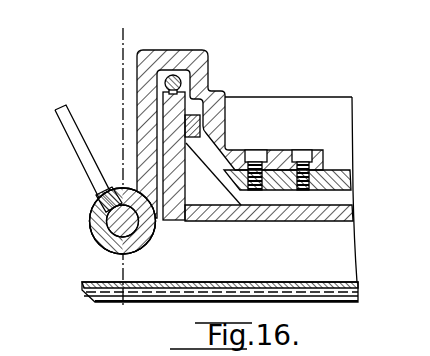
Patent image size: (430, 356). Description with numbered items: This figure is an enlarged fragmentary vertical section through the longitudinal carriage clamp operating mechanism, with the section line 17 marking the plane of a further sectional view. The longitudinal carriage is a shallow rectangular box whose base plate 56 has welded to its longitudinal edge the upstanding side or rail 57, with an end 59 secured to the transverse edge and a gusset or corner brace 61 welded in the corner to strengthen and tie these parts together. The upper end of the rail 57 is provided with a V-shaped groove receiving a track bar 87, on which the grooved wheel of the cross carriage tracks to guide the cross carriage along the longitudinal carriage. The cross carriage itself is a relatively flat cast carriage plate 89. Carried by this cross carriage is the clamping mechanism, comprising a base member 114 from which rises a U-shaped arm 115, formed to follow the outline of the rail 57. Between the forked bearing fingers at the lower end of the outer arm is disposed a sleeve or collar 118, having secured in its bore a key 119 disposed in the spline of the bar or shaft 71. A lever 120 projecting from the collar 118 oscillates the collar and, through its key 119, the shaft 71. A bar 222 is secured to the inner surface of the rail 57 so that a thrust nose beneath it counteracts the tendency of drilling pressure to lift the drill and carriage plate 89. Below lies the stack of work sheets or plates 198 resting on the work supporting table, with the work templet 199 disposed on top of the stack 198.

The section line 17— 17 is at (132, 28).
The track bar 87 is at (209, 65).
The longitudinal carriage side or rail 57 is at (185, 197).
The U-shaped arm 115 is at (196, 87).
The bar 222 is at (200, 119).
The base member 114 is at (282, 152).
The end 59 is at (346, 116).
The carriage plate 89 is at (348, 185).
The base plate 56 is at (302, 218).
The gusset or corner brace 61 is at (225, 198).
The lever 120 is at (76, 142).
The sleeve or collar 118 is at (143, 246).
The bar or shaft 71 is at (98, 243).
The key 119 is at (118, 213).
The stack of work sheets or plates 198 is at (97, 298).
The work templet 199 is at (90, 284).